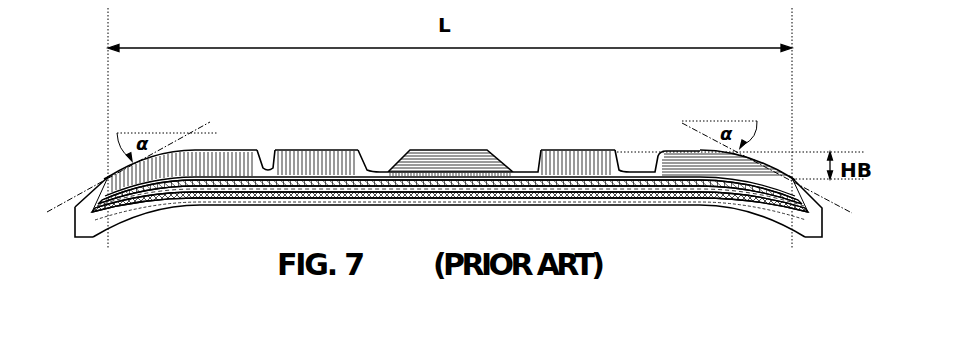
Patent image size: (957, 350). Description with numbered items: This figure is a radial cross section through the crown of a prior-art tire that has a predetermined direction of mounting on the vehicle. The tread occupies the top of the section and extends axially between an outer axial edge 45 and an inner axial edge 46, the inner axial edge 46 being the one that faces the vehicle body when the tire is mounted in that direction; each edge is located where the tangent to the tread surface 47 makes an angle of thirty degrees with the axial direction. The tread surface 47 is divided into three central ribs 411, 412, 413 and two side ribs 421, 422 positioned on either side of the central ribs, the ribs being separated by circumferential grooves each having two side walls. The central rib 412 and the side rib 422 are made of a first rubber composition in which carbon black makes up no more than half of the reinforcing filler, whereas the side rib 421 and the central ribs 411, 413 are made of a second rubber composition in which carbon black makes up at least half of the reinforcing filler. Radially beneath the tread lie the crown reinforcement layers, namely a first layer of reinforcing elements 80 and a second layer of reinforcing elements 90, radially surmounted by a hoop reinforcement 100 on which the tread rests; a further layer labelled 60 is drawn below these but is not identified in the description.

The outer axial edge 45 is at (107, 177).
The inner axial edge 46 is at (792, 178).
The tread surface 47 is at (450, 139).
The central rib 411 is at (302, 148).
The central rib 412 is at (460, 167).
The central rib 413 is at (577, 168).
The side rib 421 is at (220, 162).
The side rib 422 is at (688, 165).
The carcass 60 is at (132, 211).
The first layer of reinforcing elements 80 is at (217, 205).
The second layer of reinforcing elements 90 is at (273, 203).
The hoop reinforcement 100 is at (328, 200).